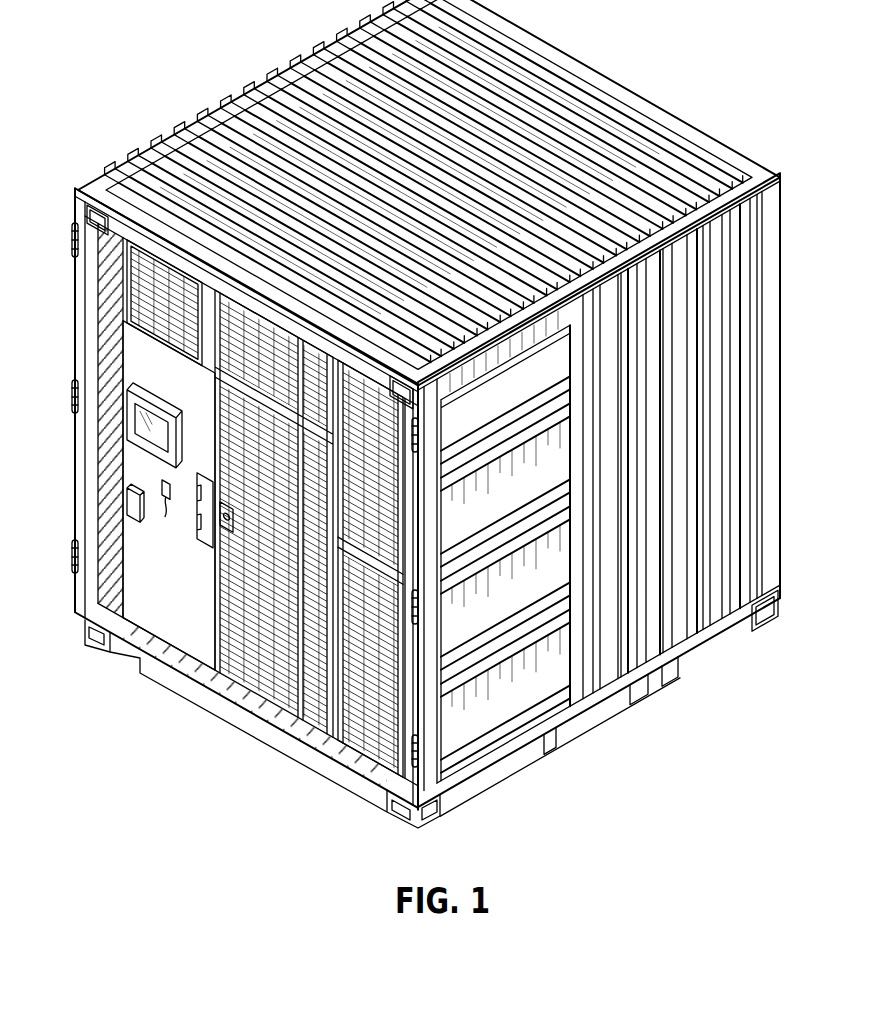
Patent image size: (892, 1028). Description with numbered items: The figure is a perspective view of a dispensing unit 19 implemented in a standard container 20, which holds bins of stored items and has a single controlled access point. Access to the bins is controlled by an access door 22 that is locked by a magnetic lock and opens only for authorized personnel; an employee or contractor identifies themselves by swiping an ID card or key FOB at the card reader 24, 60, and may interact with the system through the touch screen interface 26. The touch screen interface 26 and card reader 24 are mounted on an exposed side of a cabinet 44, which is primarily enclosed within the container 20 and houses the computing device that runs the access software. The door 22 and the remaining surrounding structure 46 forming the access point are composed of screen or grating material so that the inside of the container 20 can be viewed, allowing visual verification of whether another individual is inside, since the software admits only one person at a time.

The dispensing unit 19 is at (120, 71).
The container 20 is at (780, 218).
The access door 22 is at (237, 678).
The card reader 24 is at (127, 498).
The touch screen interface 26 is at (127, 428).
The cabinet 44 is at (136, 525).
The surrounding structure 46 is at (123, 272).
The card reader 60 is at (163, 514).